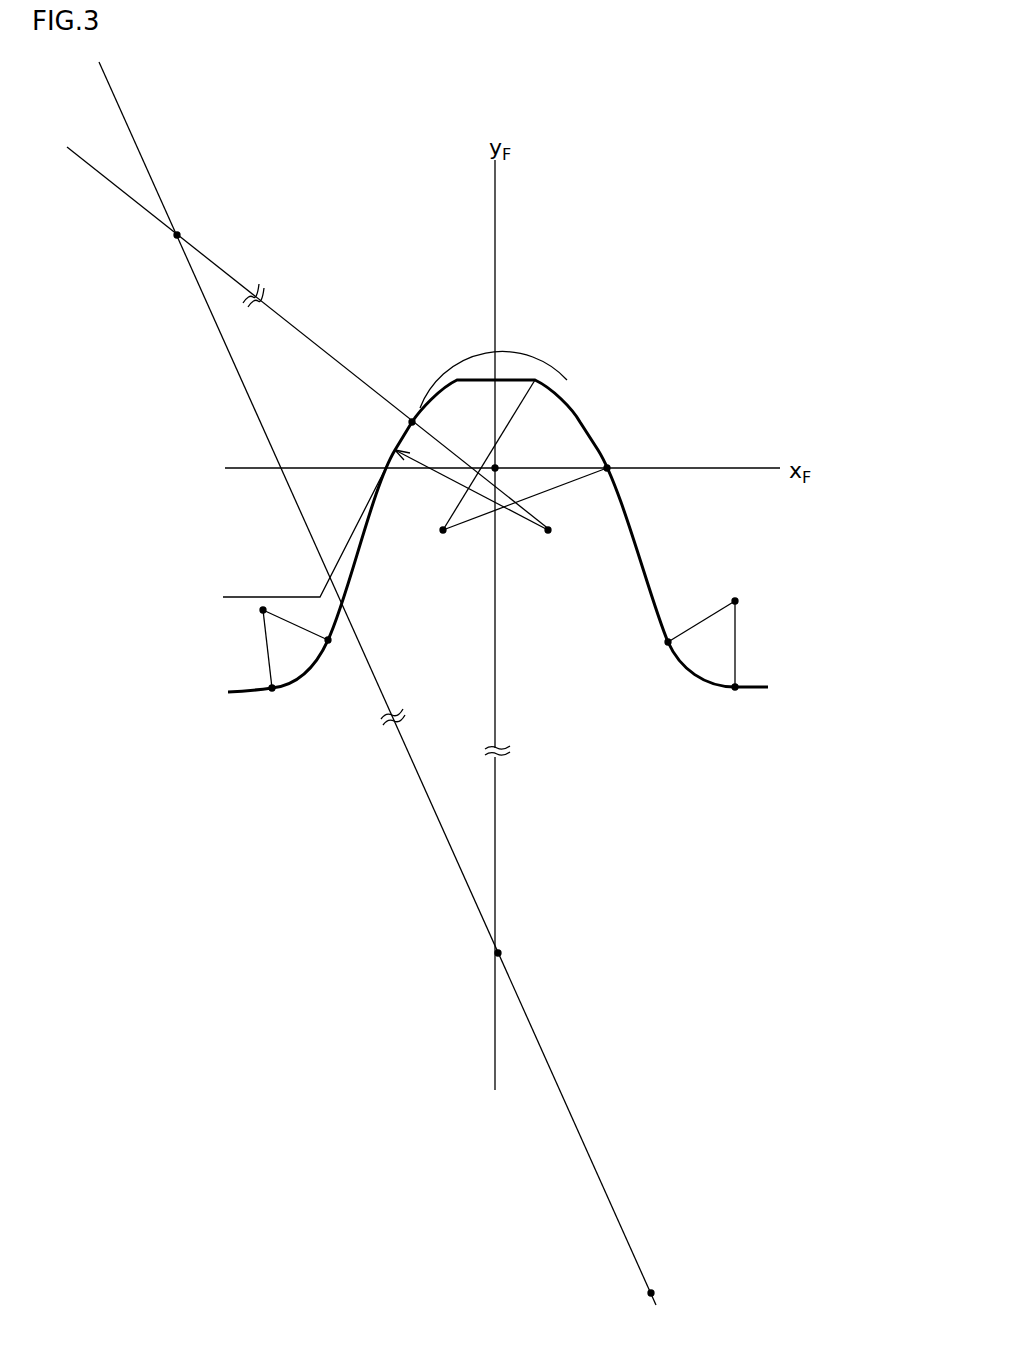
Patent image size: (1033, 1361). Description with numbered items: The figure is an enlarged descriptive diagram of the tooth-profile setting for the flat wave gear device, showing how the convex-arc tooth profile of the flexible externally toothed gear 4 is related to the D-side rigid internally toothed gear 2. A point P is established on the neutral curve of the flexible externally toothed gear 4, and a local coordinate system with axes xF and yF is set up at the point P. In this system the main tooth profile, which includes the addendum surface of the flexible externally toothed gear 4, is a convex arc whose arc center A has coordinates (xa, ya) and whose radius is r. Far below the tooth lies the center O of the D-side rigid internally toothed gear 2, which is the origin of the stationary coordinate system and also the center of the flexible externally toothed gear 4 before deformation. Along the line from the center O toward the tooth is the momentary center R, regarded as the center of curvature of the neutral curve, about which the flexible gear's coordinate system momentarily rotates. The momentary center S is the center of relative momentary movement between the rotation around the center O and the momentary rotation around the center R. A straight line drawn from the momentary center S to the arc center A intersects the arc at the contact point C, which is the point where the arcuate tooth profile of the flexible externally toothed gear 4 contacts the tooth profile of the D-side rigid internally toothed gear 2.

The D-side rigid internally toothed gear 2 is at (446, 315).
The flexible externally toothed gear 4 is at (577, 637).
The momentary center S is at (174, 237).
The contact point C is at (410, 420).
The point on the neutral curve P is at (498, 466).
The arc center A is at (549, 533).
The momentary center of movement R is at (495, 955).
The center of the D-side rigid internally toothed gear O is at (655, 1290).
The radius of the convex arc r is at (471, 490).